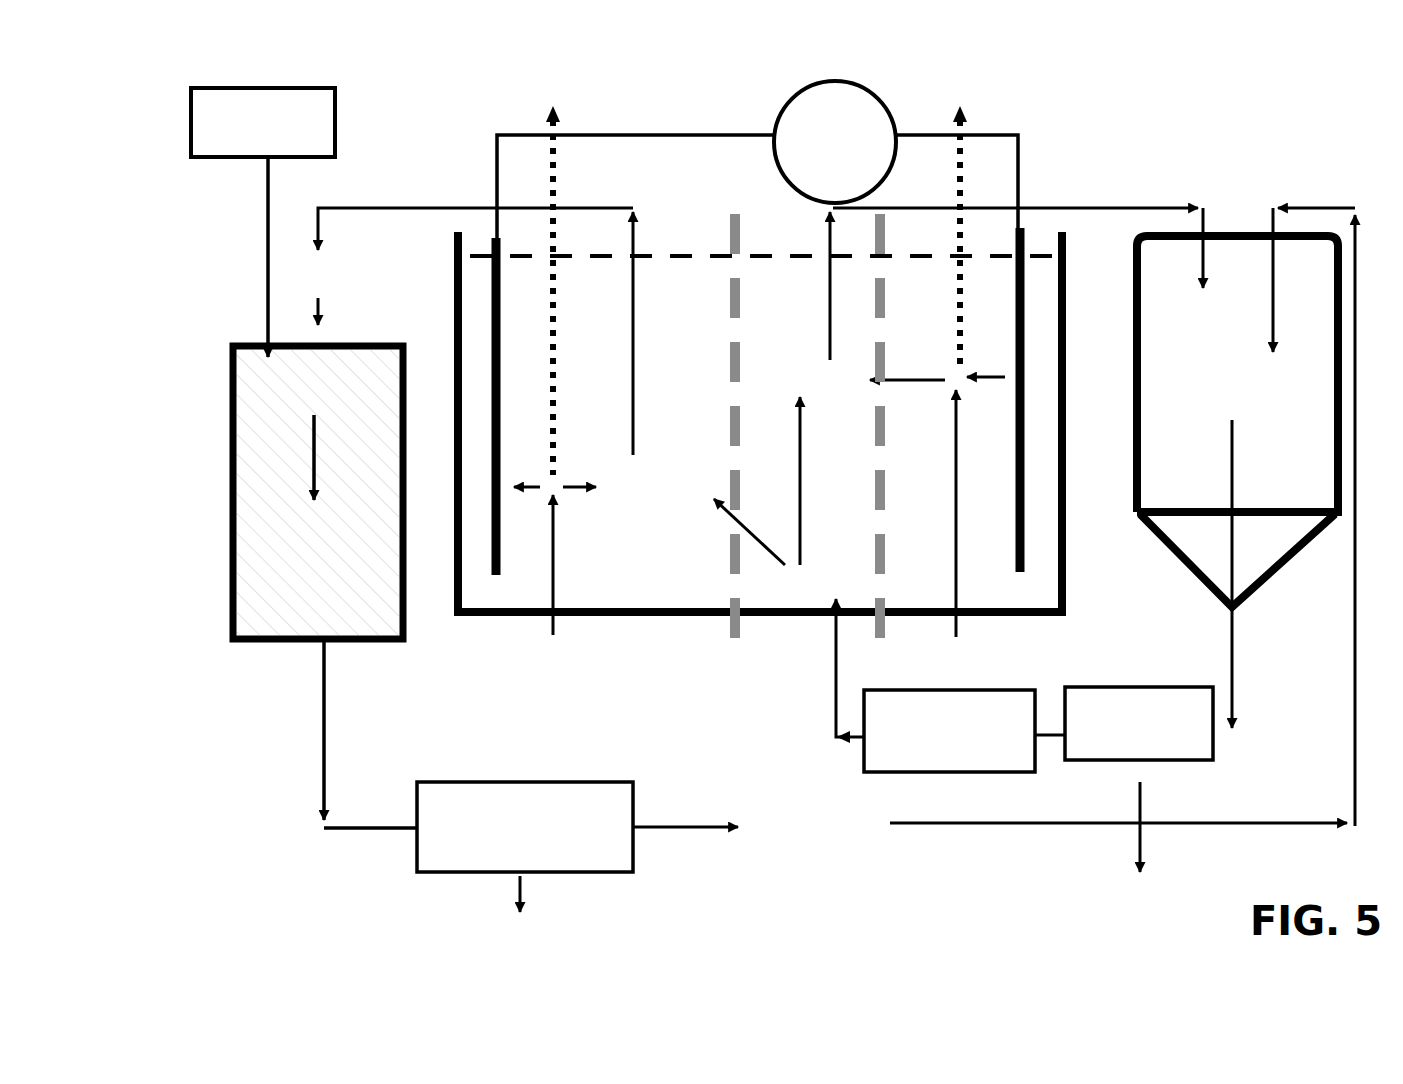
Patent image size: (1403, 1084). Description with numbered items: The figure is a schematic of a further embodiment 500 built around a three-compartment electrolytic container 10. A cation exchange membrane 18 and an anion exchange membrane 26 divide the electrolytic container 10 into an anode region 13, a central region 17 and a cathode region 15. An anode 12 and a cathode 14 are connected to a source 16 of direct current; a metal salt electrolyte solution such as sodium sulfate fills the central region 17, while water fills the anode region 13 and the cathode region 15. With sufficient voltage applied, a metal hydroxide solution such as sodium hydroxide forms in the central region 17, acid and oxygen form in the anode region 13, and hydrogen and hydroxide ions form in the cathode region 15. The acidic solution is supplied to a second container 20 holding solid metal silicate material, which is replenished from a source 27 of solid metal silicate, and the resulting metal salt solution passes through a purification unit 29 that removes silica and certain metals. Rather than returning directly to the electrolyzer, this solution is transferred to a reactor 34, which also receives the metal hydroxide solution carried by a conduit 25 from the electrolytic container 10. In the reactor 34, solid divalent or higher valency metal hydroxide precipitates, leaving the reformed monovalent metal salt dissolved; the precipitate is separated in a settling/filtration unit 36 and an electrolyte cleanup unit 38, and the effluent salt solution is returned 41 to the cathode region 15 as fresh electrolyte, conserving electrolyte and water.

The embodiment 500 is at (266, 800).
The source of solid metal silicate 27 is at (336, 138).
The second container 20 is at (355, 344).
The electrolytic container 10 is at (1066, 518).
The anode 12 is at (503, 548).
The cathode 14 is at (1022, 550).
The source of direct current 16 is at (792, 99).
The anode region 13 is at (597, 335).
The central region 17 is at (799, 335).
The cathode region 15 is at (939, 335).
The cation exchange membrane 18 is at (735, 340).
The anion exchange membrane 26 is at (885, 437).
The conduit 25 is at (1078, 206).
The reactor 34 is at (1232, 231).
The settling/filtration unit 36 is at (1118, 686).
The electrolyte cleanup unit 38 is at (990, 690).
The electrolyte return 41 is at (838, 632).
The purification unit 29 is at (414, 843).